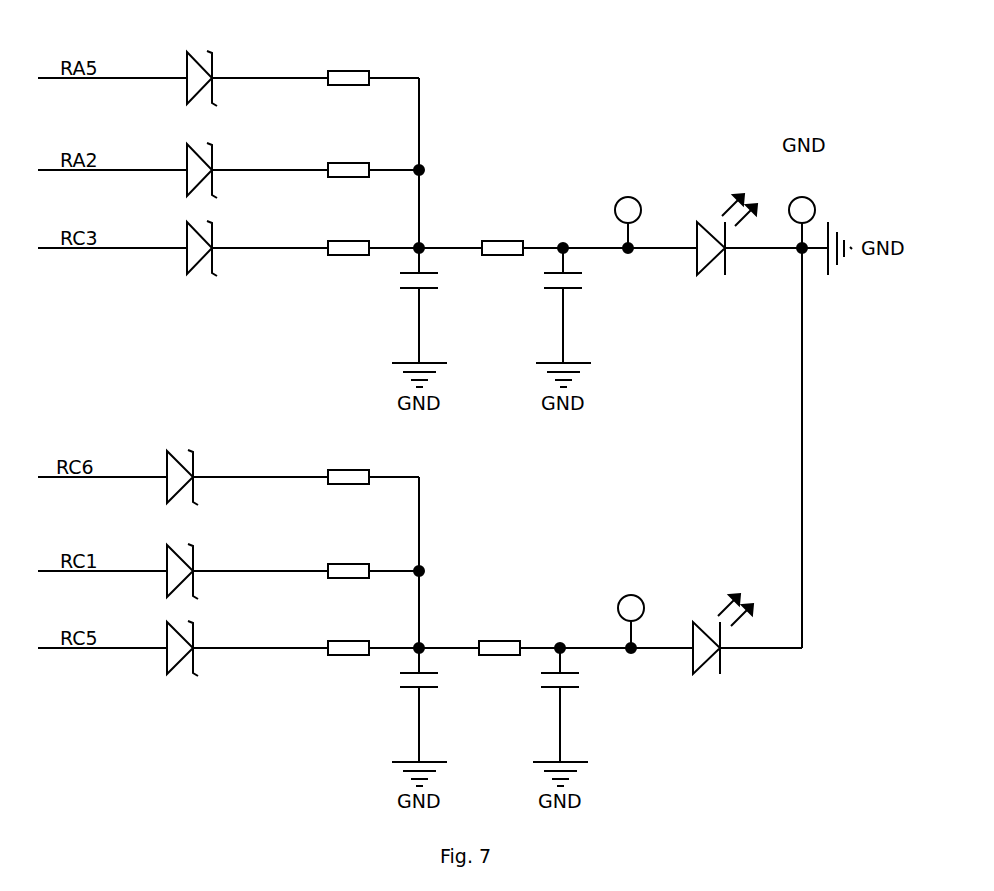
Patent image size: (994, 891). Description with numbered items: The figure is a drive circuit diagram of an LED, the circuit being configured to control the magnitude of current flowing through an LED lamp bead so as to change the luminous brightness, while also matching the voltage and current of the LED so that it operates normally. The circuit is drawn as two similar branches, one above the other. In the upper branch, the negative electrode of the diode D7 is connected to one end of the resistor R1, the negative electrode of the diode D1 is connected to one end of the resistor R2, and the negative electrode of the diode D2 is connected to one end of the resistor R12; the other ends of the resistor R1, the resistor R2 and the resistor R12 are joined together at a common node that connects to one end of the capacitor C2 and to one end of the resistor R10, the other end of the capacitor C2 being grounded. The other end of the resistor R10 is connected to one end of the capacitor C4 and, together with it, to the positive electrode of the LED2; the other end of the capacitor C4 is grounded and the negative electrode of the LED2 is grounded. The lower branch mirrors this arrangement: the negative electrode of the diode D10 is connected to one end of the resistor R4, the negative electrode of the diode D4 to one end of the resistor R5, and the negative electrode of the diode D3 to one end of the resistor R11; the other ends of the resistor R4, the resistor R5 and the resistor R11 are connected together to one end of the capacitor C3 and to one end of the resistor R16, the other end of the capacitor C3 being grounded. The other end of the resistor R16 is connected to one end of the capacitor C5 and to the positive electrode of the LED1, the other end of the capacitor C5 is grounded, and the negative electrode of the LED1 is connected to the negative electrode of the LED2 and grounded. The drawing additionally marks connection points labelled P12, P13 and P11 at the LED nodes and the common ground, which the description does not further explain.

The diode D7 is at (200, 67).
The diode D1 is at (200, 159).
The diode D2 is at (200, 263).
The diode D10 is at (181, 466).
The diode D4 is at (181, 559).
The diode D3 is at (181, 662).
The resistor R1 is at (348, 65).
The resistor R2 is at (348, 158).
The resistor R12 is at (347, 235).
The resistor R4 is at (348, 465).
The resistor R5 is at (348, 557).
The resistor R11 is at (347, 635).
The resistor R10 is at (501, 234).
The resistor R16 is at (499, 635).
The capacitor C2 is at (434, 316).
The capacitor C4 is at (578, 305).
The capacitor C3 is at (434, 714).
The capacitor C5 is at (575, 705).
The port P12 is at (630, 212).
The port P13 is at (804, 212).
The port P11 is at (633, 611).
The LED LED2 is at (725, 248).
The LED LED1 is at (722, 648).